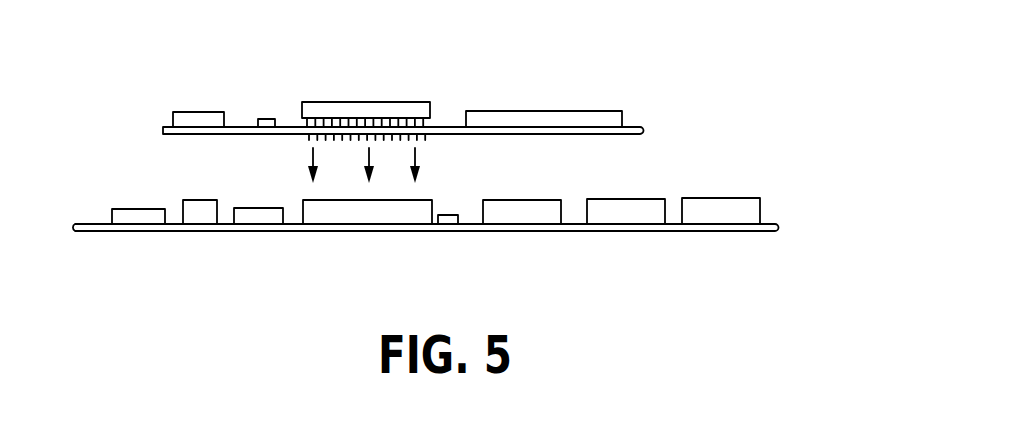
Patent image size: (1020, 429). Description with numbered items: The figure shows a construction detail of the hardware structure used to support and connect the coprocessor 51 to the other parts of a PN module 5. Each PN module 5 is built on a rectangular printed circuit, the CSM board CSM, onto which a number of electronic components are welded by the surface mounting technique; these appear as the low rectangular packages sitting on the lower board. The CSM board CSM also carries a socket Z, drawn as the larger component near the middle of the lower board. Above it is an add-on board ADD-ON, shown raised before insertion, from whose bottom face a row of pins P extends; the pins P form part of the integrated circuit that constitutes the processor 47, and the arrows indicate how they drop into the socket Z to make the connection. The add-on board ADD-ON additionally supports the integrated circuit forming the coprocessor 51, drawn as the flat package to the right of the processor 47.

The processor 47 is at (334, 88).
The coprocessor 51 is at (480, 96).
The add-on board ADD-ON is at (580, 98).
The pins P is at (292, 152).
The socket Z is at (428, 200).
The PN module 5 is at (788, 172).
The CSM board CSM is at (777, 226).